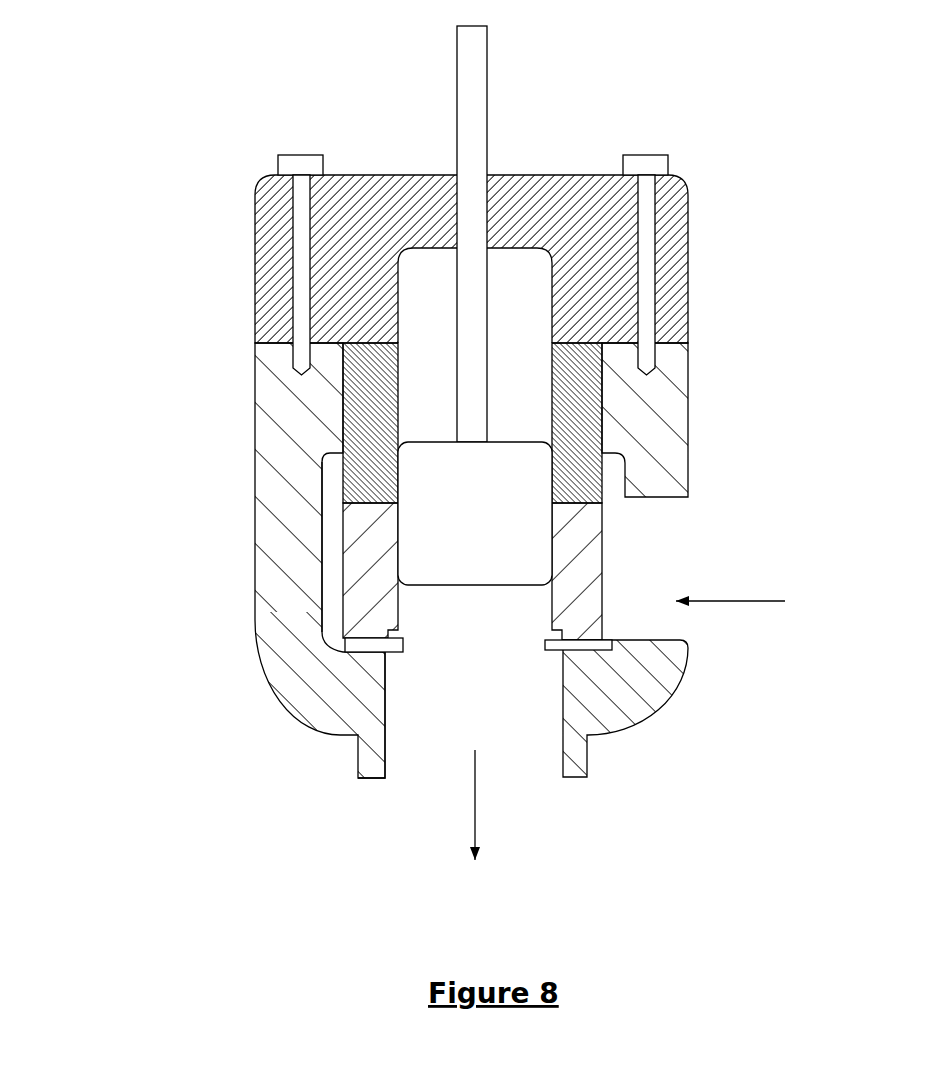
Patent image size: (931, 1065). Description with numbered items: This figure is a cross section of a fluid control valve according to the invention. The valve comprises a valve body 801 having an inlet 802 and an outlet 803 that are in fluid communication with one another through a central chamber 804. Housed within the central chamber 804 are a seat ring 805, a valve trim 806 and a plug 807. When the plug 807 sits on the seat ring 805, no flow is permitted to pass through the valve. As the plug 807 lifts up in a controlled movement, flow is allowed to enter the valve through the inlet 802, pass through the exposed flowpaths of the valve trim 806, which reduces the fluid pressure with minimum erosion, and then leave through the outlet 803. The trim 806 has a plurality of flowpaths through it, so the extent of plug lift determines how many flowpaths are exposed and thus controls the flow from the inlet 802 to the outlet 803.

The valve body 801 is at (255, 449).
The inlet 802 is at (702, 683).
The outlet 803 is at (477, 833).
The central chamber 804 is at (322, 580).
The seat ring 805 is at (378, 690).
The valve trim 806 is at (350, 620).
The plug 807 is at (455, 556).